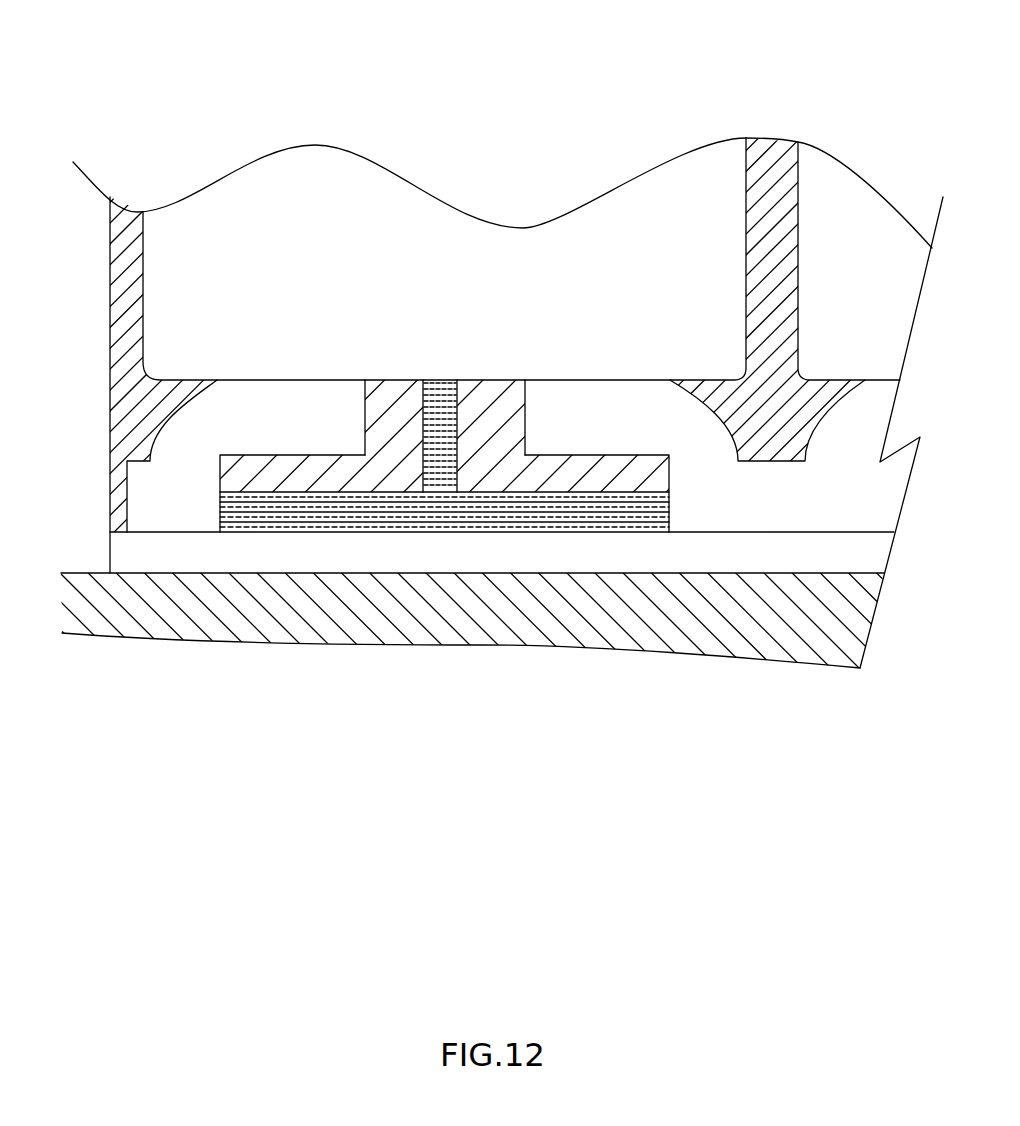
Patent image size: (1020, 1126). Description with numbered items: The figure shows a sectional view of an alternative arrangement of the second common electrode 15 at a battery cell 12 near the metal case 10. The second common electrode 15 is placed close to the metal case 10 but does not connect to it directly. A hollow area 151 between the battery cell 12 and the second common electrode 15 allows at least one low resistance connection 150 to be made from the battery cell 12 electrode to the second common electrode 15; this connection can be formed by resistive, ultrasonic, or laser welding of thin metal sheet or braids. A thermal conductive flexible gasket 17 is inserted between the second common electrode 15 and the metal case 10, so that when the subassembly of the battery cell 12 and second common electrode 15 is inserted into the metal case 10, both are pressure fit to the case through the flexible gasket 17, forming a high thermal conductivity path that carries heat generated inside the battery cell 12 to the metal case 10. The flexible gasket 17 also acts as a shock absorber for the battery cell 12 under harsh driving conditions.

The battery cell 12 is at (498, 258).
The second common electrode 15 is at (173, 510).
The hollow area 151 is at (395, 413).
The low resistance connection 150 is at (393, 515).
The thermal conductive flexible gasket 17 is at (623, 555).
The metal case 10 is at (508, 617).